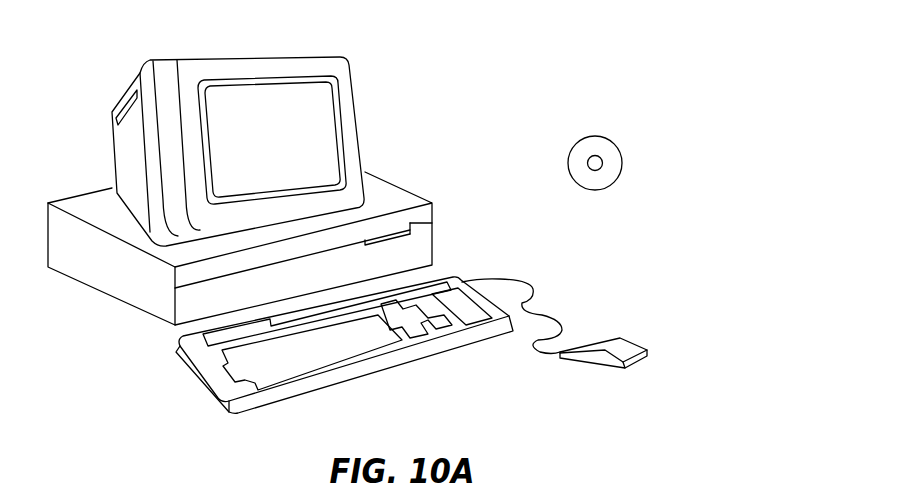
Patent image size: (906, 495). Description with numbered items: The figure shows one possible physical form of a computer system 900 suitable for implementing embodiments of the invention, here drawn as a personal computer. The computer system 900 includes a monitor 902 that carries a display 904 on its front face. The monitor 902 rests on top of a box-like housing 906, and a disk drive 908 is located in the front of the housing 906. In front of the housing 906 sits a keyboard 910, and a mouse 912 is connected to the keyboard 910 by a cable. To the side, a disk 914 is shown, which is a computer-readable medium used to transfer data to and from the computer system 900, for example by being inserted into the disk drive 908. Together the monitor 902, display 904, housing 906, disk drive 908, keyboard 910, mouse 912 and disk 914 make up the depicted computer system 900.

The computer system 900 is at (527, 43).
The monitor 902 is at (362, 150).
The display 904 is at (330, 98).
The housing 906 is at (145, 313).
The disk drive 908 is at (410, 223).
The keyboard 910 is at (357, 377).
The mouse 912 is at (633, 345).
The disk 914 is at (607, 138).